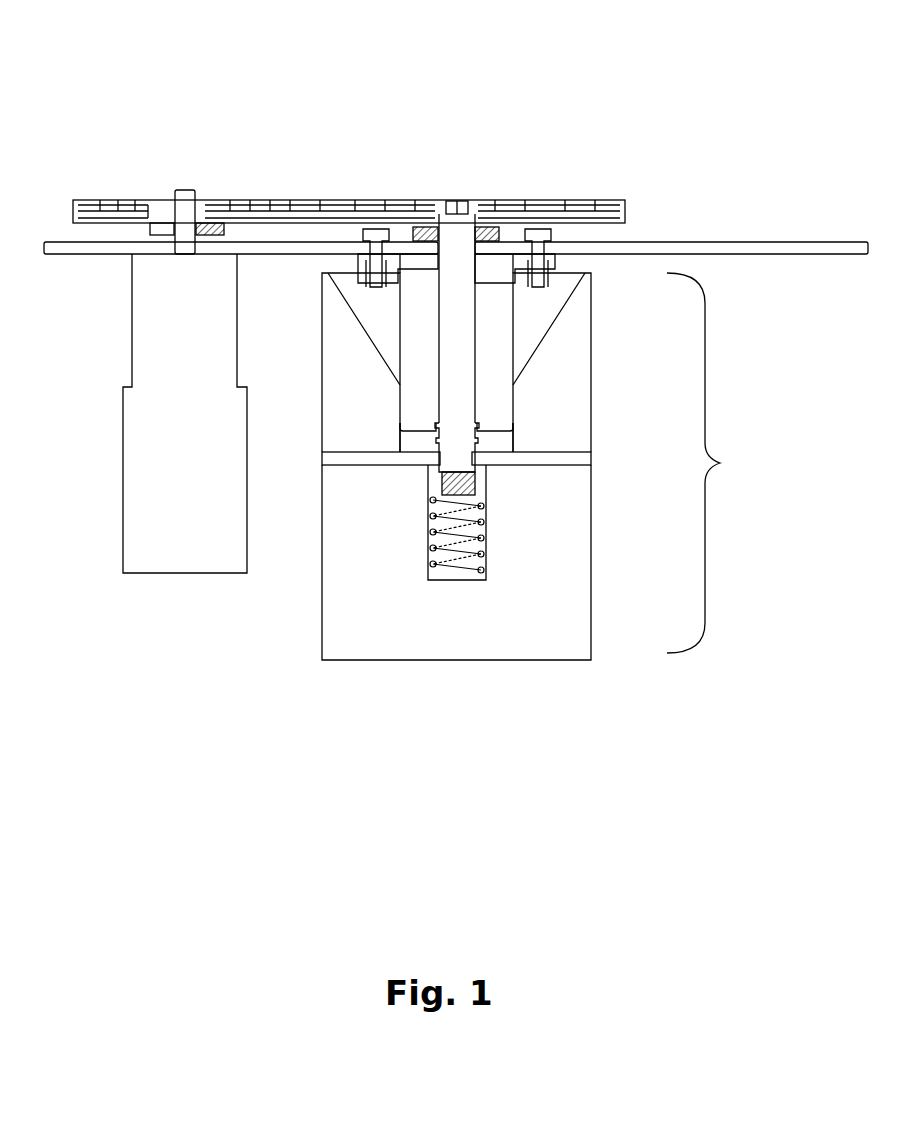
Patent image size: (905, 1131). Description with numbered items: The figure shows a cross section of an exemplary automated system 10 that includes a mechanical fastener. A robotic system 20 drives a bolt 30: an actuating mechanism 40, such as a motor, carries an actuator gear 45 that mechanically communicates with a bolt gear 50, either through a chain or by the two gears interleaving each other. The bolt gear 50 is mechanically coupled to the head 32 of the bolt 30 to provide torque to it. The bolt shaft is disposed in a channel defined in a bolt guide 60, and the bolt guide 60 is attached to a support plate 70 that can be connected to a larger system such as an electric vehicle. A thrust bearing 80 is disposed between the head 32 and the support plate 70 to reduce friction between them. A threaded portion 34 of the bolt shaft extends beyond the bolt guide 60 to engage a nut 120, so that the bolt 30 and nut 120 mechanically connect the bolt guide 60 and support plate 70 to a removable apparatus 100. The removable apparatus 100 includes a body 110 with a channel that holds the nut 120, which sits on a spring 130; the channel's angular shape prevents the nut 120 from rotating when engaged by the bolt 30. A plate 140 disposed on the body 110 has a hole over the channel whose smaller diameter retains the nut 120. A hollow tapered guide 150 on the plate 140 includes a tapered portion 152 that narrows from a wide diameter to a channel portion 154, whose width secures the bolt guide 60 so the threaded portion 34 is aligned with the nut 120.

The automated system 10 is at (152, 50).
The robotic system 20 is at (100, 165).
The bolt 30 is at (452, 300).
The head 32 is at (474, 200).
The threaded portion 34 is at (422, 443).
The actuating mechanism 40 is at (185, 413).
The actuator gear 45 is at (265, 186).
The bolt gear 50 is at (365, 186).
The bolt guide 60 is at (415, 355).
The support plate 70 is at (727, 240).
The thrust bearing 80 is at (500, 222).
The removable apparatus 100 is at (726, 463).
The body 110 is at (600, 530).
The nut 120 is at (482, 482).
The spring 130 is at (487, 527).
The plate 140 is at (600, 458).
The tapered guide 150 is at (600, 365).
The tapered portion 152 is at (572, 320).
The channel portion 154 is at (527, 431).